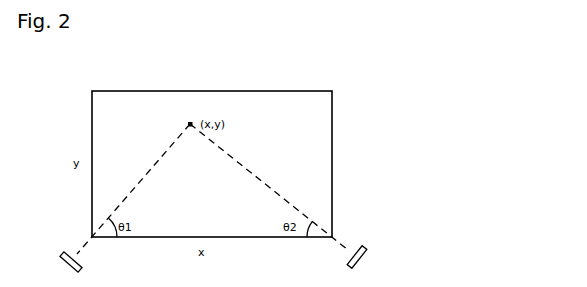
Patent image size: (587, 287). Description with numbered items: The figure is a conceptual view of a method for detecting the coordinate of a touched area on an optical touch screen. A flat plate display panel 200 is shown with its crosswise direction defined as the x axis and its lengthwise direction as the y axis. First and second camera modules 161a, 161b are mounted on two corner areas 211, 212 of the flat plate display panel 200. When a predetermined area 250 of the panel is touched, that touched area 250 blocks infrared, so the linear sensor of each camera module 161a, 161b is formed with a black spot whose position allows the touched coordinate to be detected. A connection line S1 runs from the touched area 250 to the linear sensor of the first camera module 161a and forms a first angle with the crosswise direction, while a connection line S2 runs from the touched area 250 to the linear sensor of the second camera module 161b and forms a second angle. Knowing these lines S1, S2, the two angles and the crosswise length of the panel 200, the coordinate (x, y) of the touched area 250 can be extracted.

The flat plate display panel 200 is at (250, 91).
The touched predetermined area 250 is at (188, 124).
The first corner area 211 is at (92, 237).
The second corner area 212 is at (334, 237).
The first camera module 161a is at (60, 267).
The second camera module 161b is at (371, 259).
The first connection line S1 is at (143, 180).
The second connection line S2 is at (256, 173).